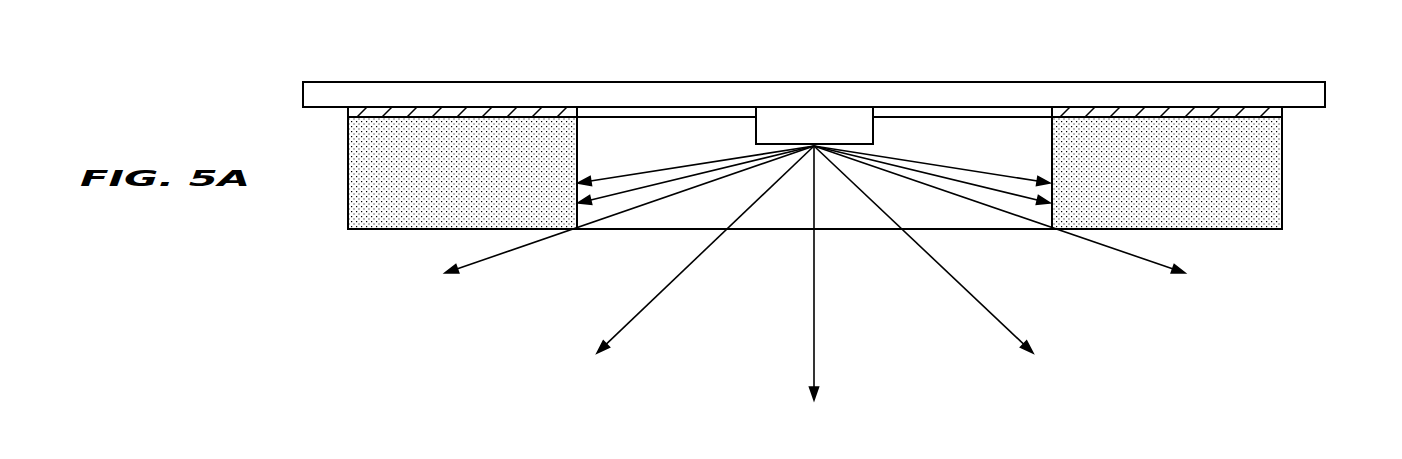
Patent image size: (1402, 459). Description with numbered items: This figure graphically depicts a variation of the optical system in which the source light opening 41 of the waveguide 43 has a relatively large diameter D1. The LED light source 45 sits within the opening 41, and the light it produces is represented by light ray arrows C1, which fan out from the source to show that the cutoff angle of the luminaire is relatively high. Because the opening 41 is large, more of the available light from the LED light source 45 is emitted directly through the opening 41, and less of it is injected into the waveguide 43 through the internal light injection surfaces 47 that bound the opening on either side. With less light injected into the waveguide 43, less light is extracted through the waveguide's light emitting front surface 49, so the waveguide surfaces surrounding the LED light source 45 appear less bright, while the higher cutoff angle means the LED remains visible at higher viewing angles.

The source light opening 41 is at (957, 220).
The waveguide 43 is at (1237, 230).
The LED light source 45 is at (812, 124).
The internal light injection surface 47 is at (578, 141).
The light emitting front surface 49 is at (412, 232).
The diameter D1 is at (586, 154).
The light ray arrows C1 is at (495, 260).